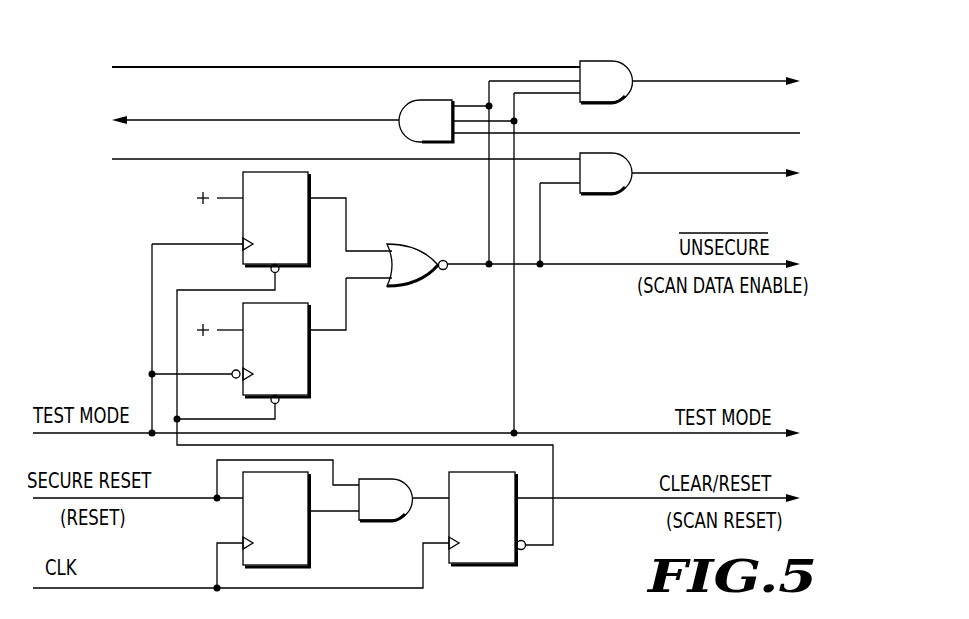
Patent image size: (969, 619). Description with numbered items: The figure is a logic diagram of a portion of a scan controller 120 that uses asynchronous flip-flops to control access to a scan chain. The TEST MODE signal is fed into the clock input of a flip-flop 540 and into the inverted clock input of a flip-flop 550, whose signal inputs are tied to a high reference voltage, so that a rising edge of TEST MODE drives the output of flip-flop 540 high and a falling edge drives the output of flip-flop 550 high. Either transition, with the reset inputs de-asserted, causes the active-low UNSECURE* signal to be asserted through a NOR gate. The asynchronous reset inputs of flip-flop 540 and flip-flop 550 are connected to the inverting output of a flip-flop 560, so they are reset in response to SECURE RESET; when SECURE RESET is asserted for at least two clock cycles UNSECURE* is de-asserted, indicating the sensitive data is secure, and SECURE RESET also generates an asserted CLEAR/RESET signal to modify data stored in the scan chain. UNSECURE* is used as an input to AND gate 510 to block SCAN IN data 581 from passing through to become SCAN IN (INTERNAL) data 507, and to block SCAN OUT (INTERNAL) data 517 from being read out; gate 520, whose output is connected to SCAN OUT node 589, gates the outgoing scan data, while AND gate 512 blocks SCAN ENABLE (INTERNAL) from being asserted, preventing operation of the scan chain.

The scan controller 120 is at (104, 38).
The SCAN IN data 581 is at (350, 66).
The SCAN OUT node 589 is at (358, 119).
The AND gate 520 is at (415, 100).
The AND gate 510 is at (607, 62).
The SCAN IN (INTERNAL) data 507 is at (657, 81).
The SCAN OUT (INTERNAL) data 517 is at (578, 132).
The AND gate 512 is at (607, 194).
The flip-flop 540 is at (292, 206).
The flip-flop 550 is at (292, 339).
The flip-flop 560 is at (499, 508).